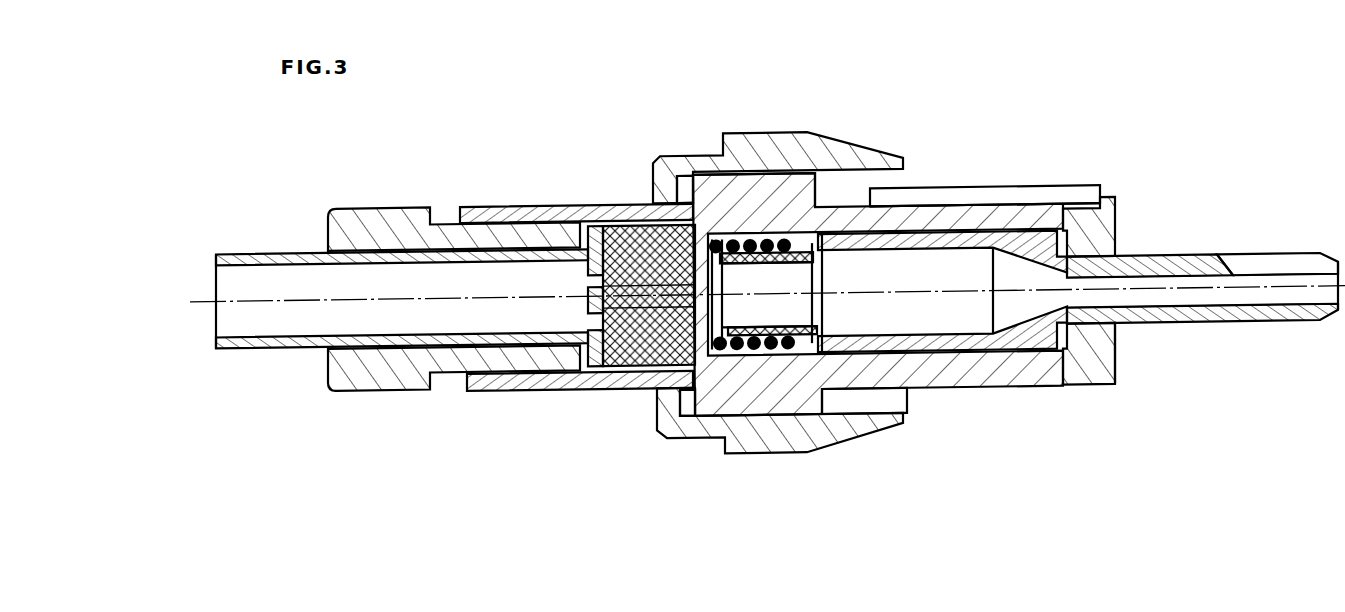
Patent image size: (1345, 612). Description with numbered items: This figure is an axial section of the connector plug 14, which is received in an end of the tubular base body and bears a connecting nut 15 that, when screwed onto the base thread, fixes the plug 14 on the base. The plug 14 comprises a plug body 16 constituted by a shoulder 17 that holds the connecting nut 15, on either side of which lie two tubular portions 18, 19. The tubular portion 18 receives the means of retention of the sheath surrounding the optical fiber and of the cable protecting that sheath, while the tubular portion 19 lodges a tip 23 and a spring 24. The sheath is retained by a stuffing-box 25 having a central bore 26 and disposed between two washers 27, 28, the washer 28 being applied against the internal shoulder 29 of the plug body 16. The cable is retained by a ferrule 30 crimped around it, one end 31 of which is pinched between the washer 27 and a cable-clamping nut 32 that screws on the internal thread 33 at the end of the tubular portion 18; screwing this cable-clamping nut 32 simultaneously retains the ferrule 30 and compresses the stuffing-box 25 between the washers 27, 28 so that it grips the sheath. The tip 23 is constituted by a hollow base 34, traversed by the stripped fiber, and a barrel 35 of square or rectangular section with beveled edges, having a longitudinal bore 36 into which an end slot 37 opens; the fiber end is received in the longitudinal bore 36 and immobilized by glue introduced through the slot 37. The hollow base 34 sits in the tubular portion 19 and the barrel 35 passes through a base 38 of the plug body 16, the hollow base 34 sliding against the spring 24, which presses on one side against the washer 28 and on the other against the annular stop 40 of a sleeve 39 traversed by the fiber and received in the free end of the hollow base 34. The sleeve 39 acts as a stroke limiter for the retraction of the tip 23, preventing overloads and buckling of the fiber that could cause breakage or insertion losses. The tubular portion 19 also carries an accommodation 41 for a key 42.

The plug 14 is at (598, 392).
The connecting nut 15 is at (770, 150).
The plug body 16 is at (883, 377).
The shoulder 17 is at (770, 432).
The tubular portion 18 is at (577, 210).
The tubular portion 19 is at (1000, 382).
The tip 23 is at (1090, 367).
The spring 24 is at (712, 358).
The stuffing-box 25 is at (648, 372).
The central bore 26 is at (600, 298).
The washer 27 is at (598, 325).
The washer 28 is at (688, 402).
The internal shoulder 29 is at (715, 218).
The ferrule 30 is at (312, 352).
The end 31 is at (560, 380).
The cable-clamping nut 32 is at (412, 385).
The internal thread 33 is at (490, 207).
The hollow base 34 is at (848, 246).
The barrel 35 is at (1205, 318).
The longitudinal bore 36 is at (1155, 301).
The end slot 37 is at (1257, 266).
The base 38 is at (1120, 362).
The sleeve 39 is at (735, 325).
The annular stop 40 is at (787, 353).
The accommodation 41 is at (935, 210).
The key 42 is at (990, 198).